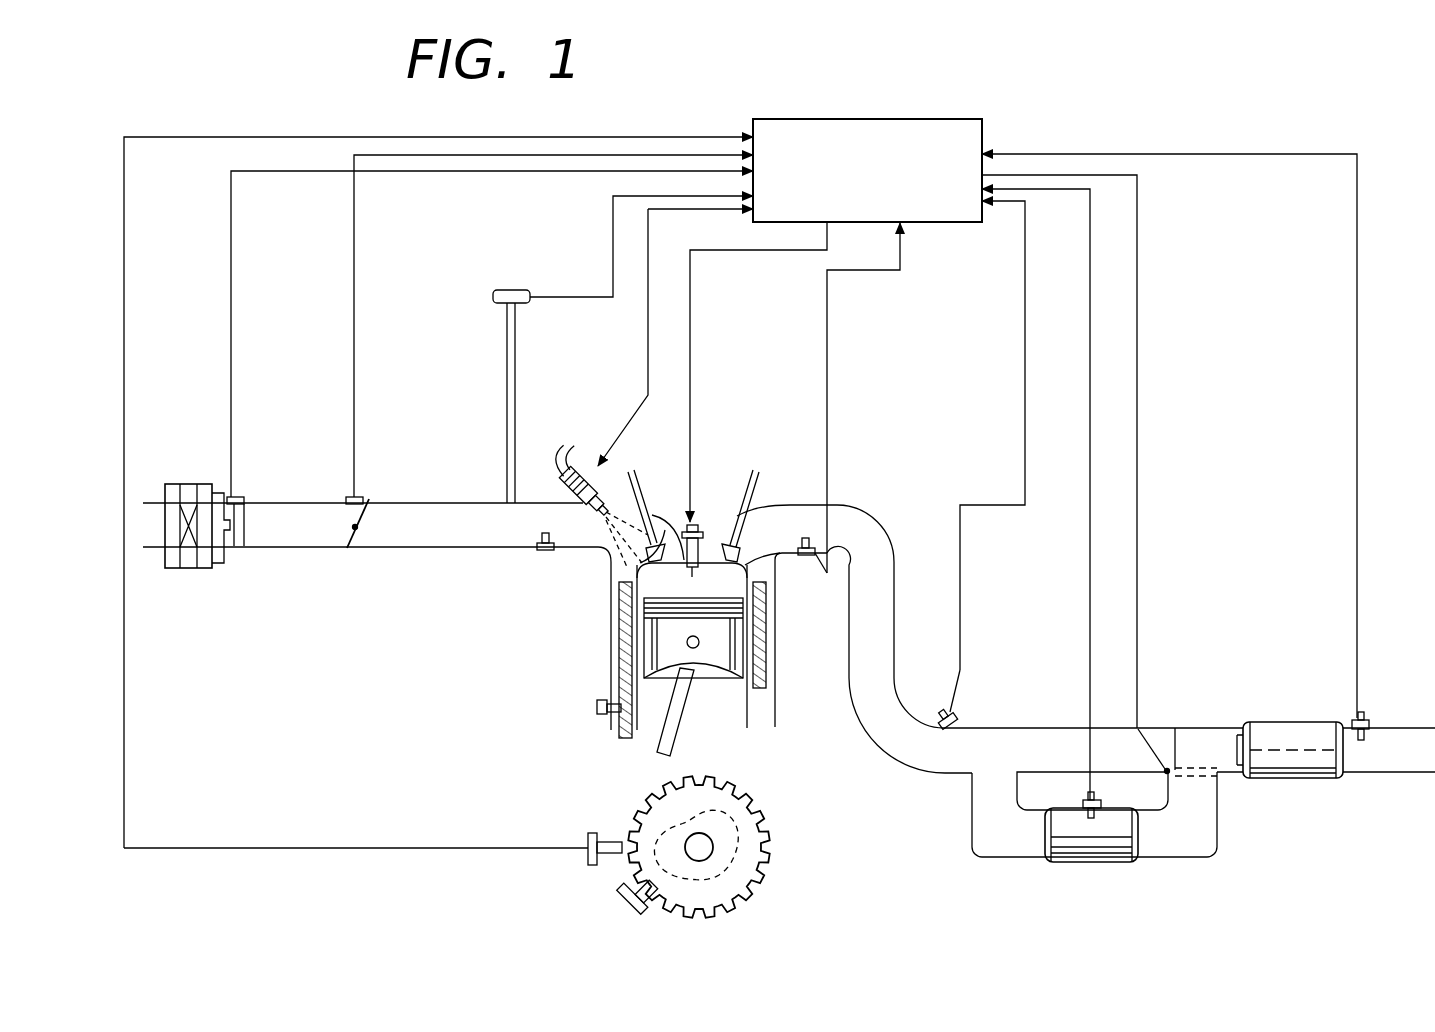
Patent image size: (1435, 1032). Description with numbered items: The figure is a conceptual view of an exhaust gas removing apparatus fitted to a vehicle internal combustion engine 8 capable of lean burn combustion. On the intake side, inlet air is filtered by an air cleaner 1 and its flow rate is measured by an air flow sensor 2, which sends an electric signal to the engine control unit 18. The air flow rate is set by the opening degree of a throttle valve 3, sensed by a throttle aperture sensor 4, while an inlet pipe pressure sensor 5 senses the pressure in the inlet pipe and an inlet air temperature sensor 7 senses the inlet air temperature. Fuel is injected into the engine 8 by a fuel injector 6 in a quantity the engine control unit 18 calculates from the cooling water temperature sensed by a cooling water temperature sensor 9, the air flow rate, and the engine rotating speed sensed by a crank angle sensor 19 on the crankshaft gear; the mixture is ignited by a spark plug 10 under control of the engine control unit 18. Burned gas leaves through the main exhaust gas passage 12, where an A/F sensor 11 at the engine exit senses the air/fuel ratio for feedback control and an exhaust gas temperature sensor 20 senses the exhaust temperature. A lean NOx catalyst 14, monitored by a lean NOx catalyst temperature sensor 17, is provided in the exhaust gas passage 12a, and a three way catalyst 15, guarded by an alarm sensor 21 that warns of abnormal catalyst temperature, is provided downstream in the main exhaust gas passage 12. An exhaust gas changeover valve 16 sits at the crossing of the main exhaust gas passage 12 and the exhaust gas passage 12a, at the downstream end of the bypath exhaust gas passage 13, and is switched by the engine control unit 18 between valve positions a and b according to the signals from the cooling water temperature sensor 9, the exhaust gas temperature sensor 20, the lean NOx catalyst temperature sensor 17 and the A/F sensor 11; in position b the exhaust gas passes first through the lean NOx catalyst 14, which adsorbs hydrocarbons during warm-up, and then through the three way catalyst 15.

The air cleaner 1 is at (183, 570).
The air flow sensor 2 is at (235, 558).
The throttle valve 3 is at (372, 548).
The throttle aperture sensor 4 is at (368, 497).
The inlet pipe pressure sensor 5 is at (510, 290).
The fuel injector 6 is at (583, 466).
The inlet air temperature sensor 7 is at (536, 566).
The internal combustion engine 8 is at (776, 714).
The cooling water temperature sensor 9 is at (597, 714).
The spark plug 10 is at (682, 524).
The A/F sensor 11 is at (810, 556).
The main exhaust gas passage 12 is at (894, 749).
The exhaust gas passage 12a is at (972, 820).
The bypath exhaust gas passage 13 is at (1038, 726).
The lean NOx catalyst 14 is at (1070, 864).
The three way catalyst 15 is at (1314, 778).
The exhaust gas changeover valve 16 is at (1178, 738).
The lean NOx catalyst temperature sensor 17 is at (1092, 862).
The engine control unit 18 is at (977, 118).
The crank angle sensor 19 is at (614, 840).
The exhaust gas temperature sensor 20 is at (952, 716).
The alarm sensor 21 is at (1362, 716).
The valve position a is at (1196, 786).
The valve position b is at (1158, 744).